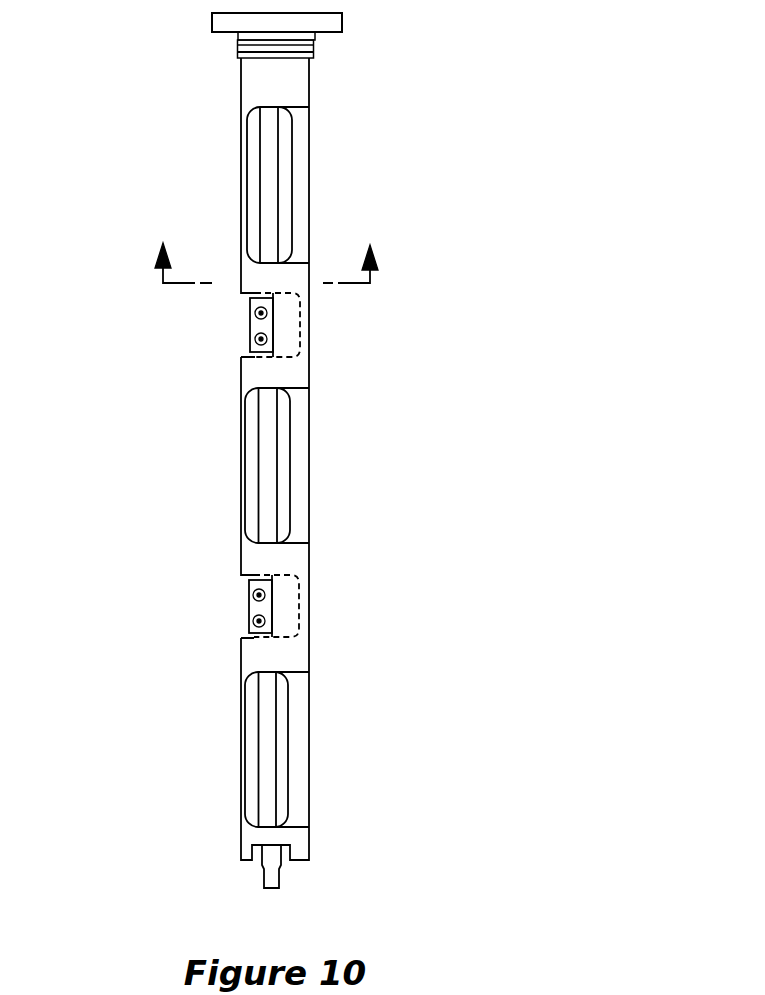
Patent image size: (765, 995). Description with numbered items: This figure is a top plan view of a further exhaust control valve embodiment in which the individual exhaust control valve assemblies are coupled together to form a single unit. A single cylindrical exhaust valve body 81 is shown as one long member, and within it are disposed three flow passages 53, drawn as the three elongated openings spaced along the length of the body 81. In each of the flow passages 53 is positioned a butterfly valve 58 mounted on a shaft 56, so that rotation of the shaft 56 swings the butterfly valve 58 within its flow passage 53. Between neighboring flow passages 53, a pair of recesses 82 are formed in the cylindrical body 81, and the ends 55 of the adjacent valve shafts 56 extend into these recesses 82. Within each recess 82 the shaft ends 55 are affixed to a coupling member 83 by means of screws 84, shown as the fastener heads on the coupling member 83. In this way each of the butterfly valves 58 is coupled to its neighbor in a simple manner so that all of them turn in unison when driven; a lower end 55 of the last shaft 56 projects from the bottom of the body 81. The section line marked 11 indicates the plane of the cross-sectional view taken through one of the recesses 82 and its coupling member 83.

The cylindrical exhaust valve body 81 is at (318, 108).
The shaft 56 is at (290, 143).
The butterfly valve 58 is at (285, 165).
The flow passage 53 is at (286, 197).
The recess 82 is at (248, 310).
The coupling member 83 is at (248, 327).
The screw 84 is at (251, 298).
The shaft end 55 is at (273, 882).
The section line 11- 11 is at (264, 256).